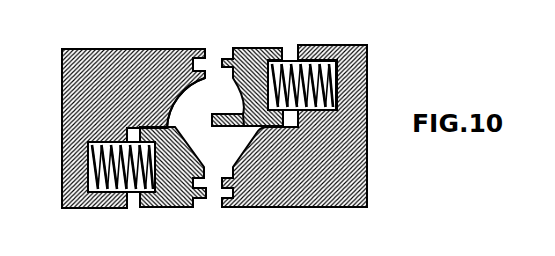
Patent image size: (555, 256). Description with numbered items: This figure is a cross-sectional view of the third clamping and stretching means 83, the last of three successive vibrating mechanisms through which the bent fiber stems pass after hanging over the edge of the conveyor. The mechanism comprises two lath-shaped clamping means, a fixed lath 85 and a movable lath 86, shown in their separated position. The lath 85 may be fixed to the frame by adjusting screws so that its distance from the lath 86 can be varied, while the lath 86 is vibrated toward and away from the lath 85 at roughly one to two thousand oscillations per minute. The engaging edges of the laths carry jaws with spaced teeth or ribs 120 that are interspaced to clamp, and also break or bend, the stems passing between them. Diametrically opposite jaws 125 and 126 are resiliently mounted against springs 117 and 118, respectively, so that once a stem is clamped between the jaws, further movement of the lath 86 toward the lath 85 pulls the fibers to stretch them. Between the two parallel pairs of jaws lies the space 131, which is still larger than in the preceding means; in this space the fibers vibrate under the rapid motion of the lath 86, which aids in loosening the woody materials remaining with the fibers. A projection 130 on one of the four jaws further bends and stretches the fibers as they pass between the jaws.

The third clamping and stretching means 83 is at (50, 155).
The fixed lath 85 is at (104, 57).
The movable lath 86 is at (327, 198).
The spring 117 is at (130, 193).
The spring 118 is at (289, 57).
The spaced teeth or ribs 120 is at (213, 48).
The resiliently mounted jaw 125 is at (176, 205).
The resiliently mounted jaw 126 is at (261, 48).
The projection 130 is at (228, 115).
The space 131 is at (223, 152).